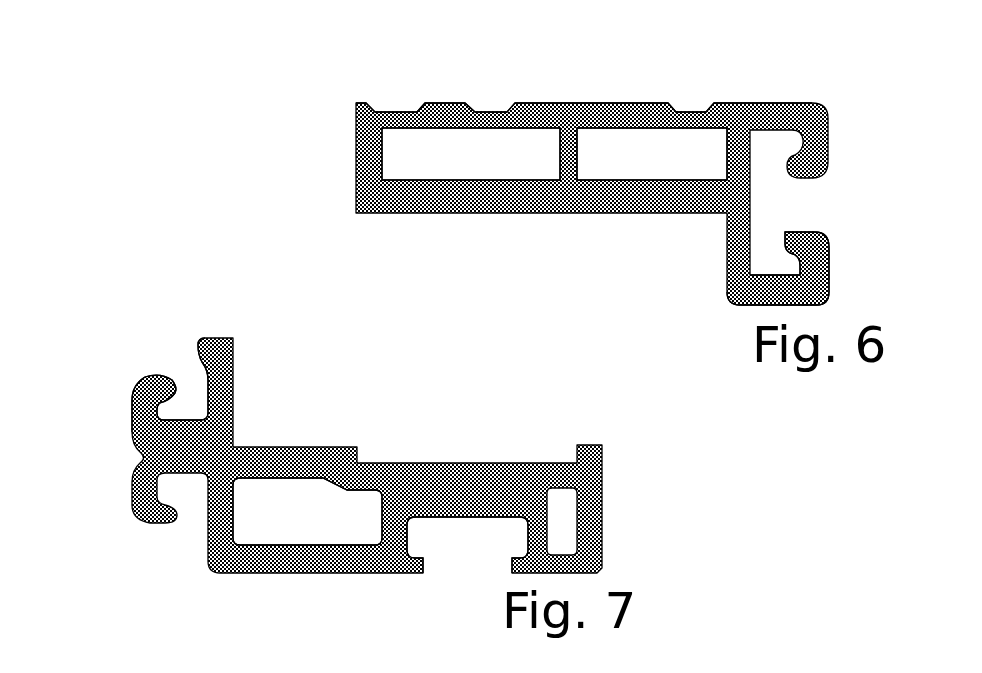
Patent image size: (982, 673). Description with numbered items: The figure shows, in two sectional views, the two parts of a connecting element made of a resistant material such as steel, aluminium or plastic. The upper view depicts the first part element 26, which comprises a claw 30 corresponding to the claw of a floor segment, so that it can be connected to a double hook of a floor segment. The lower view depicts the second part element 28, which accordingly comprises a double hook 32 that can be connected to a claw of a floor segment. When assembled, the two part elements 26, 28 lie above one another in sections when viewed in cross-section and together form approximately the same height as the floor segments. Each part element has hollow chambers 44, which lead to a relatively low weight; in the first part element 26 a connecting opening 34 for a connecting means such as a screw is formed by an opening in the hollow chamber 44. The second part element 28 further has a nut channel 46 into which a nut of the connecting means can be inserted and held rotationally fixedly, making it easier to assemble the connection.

In FIG. 6, the first part element 26 is at (778, 110).
In FIG. 7, the second part element 28 is at (274, 456).
In FIG. 6, the claw 30 is at (733, 283).
In FIG. 7, the double hook 32 is at (145, 395).
In FIG. 6, the connecting opening 34 is at (636, 108).
In FIG. 6, the hollow chamber 44 is at (407, 155).
In FIG. 7, the hollow chamber 44 is at (255, 536).
In FIG. 7, the nut channel 46 is at (453, 537).